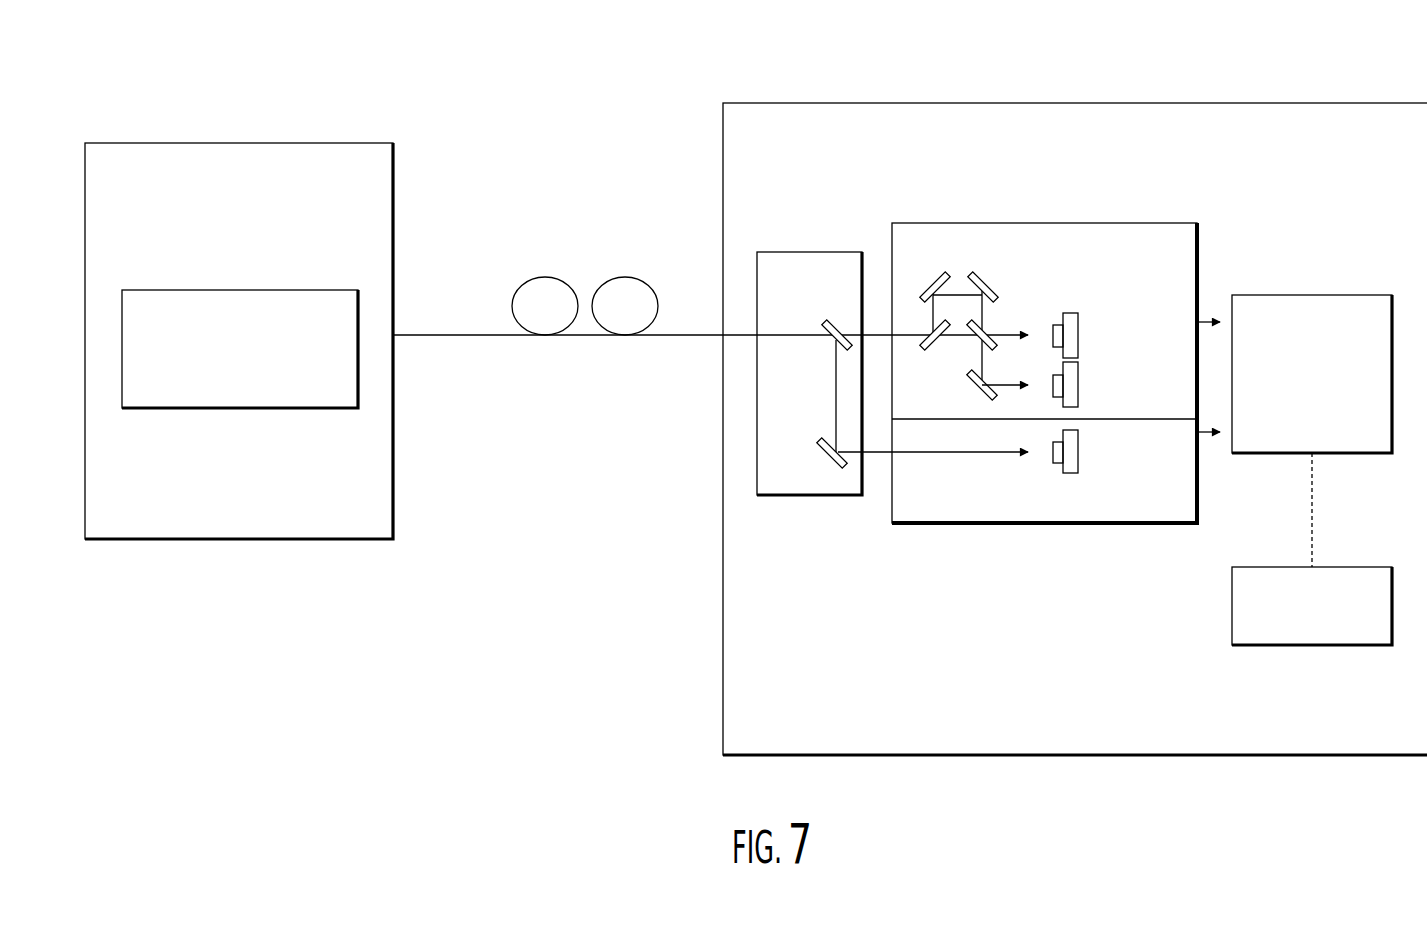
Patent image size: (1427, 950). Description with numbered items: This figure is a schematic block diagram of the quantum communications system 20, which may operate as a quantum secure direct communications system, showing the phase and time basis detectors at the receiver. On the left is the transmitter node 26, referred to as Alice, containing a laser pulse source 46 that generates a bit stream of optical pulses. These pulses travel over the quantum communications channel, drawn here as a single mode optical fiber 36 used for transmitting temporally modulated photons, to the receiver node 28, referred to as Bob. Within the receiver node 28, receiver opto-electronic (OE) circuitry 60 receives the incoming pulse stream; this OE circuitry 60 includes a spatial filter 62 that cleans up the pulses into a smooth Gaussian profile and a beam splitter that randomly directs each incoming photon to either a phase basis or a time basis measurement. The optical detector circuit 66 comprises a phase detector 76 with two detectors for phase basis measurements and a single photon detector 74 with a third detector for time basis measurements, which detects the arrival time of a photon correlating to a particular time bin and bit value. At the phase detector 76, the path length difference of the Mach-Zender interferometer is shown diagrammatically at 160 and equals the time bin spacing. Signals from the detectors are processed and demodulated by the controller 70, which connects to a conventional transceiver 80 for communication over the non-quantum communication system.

The quantum communications system 20 is at (620, 75).
The transmitter node 26 is at (277, 143).
The laser pulse source 46 is at (343, 290).
The single mode optical fiber 36 is at (466, 336).
The receiver node 28 is at (950, 102).
The receiver opto-electronic (OE) circuitry 60 is at (795, 252).
The spatial filter 62 is at (835, 360).
The Mach-Zender interferometer path length difference 160 is at (940, 277).
The phase detector 76 is at (1155, 233).
The single photon detector 74 is at (1130, 510).
The optical detector circuit 66 is at (1258, 265).
The controller 70 is at (1345, 294).
The transceiver 80 is at (1320, 567).